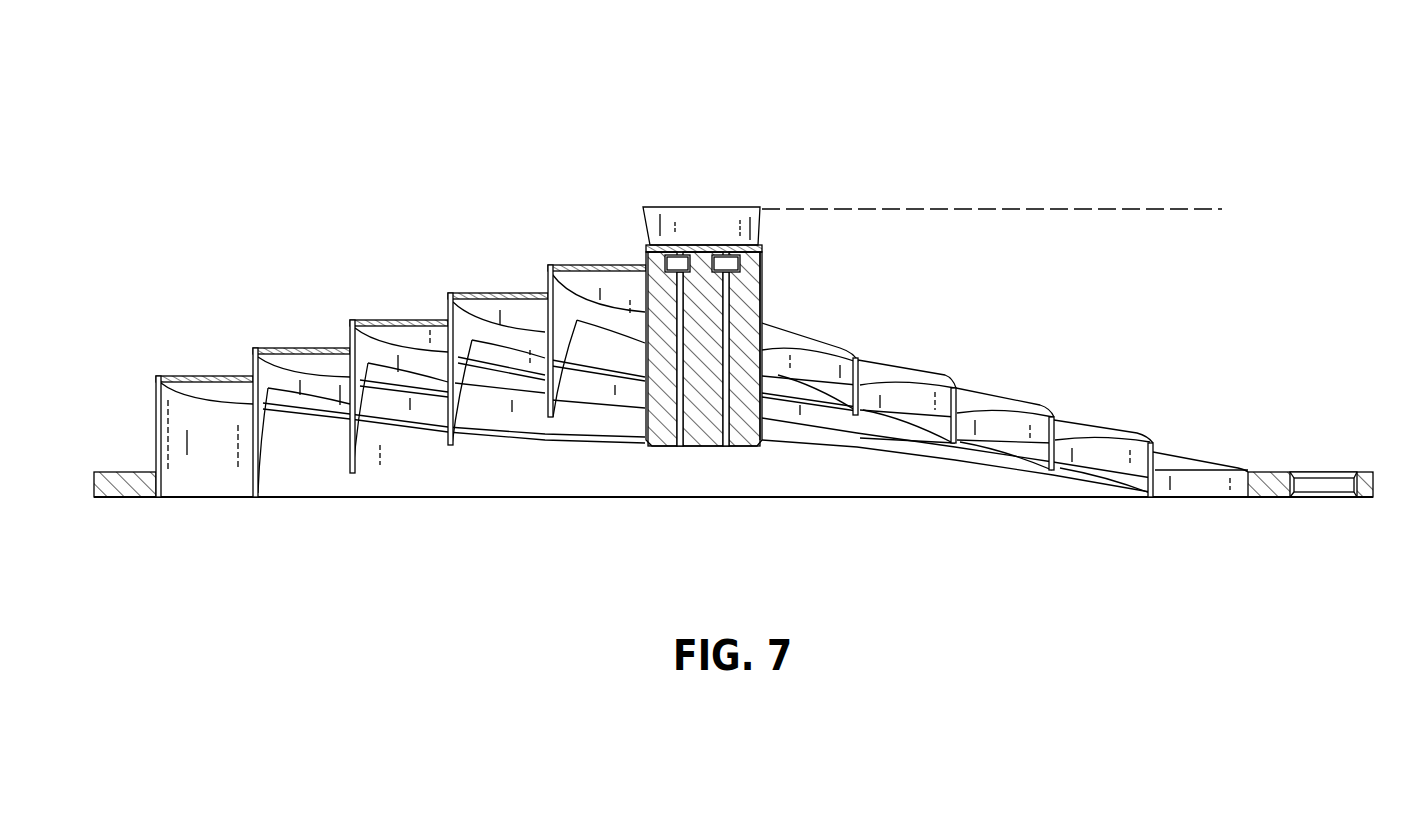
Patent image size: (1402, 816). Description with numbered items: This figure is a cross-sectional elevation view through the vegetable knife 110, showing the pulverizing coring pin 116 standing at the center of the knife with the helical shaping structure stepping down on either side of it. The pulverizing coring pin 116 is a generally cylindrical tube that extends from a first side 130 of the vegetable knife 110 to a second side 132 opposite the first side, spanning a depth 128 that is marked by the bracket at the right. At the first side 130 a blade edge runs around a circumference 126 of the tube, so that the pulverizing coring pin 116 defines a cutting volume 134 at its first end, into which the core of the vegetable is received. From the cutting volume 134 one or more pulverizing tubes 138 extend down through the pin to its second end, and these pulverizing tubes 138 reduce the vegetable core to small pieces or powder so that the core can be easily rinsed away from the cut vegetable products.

The vegetable knife 110 is at (1193, 95).
The pulverizing coring pin 116 is at (762, 292).
The circumference 126 is at (722, 207).
The depth 128 is at (1236, 209).
The first side 130 is at (668, 158).
The second side 132 is at (703, 455).
The cutting volume 134 is at (688, 225).
The pulverizing tubes 138 is at (678, 446).